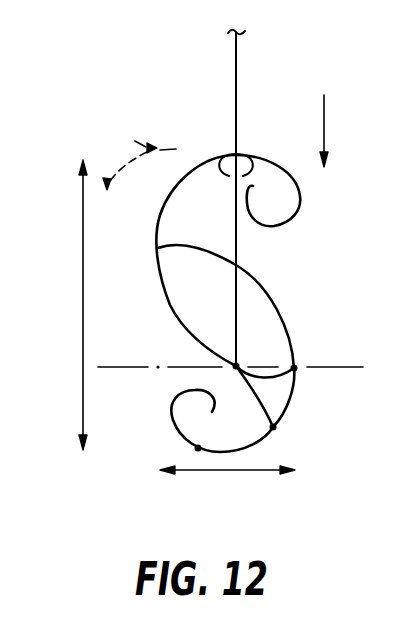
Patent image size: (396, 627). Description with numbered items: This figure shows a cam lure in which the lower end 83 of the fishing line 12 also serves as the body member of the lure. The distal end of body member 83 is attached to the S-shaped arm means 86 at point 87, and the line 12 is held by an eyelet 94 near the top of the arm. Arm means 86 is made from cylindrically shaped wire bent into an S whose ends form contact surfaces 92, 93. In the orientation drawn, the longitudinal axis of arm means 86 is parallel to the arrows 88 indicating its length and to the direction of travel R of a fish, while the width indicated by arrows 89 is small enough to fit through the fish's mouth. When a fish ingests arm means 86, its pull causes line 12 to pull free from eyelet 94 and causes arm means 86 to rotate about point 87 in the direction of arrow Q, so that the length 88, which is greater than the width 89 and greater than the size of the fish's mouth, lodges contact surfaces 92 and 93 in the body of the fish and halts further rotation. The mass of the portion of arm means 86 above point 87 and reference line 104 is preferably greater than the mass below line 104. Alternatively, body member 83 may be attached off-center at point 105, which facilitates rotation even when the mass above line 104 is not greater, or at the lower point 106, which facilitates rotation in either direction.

The fishing line 12 is at (242, 113).
The contact surface 92 is at (235, 155).
The eyelet 94 is at (229, 176).
The lower end of fishing line (body member) 83 is at (236, 300).
The attachment point 87 is at (233, 364).
The lower attachment point 106 is at (258, 396).
The off-center attachment point 105 is at (296, 370).
The S-shaped arm means 86 is at (281, 436).
The contact surface 93 is at (257, 445).
The reference line 104 is at (147, 366).
The length arrows 88 is at (82, 310).
The width arrows 89 is at (238, 472).